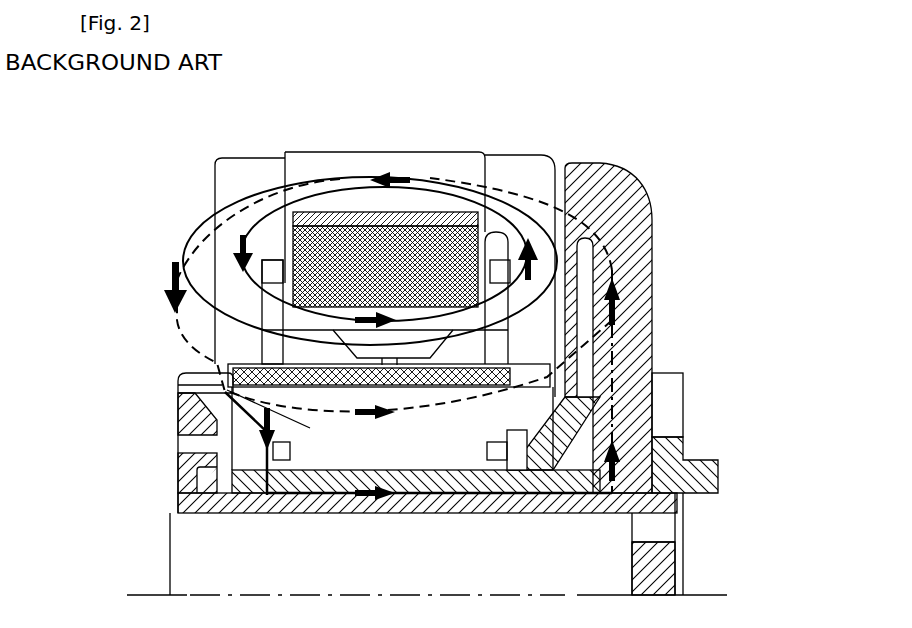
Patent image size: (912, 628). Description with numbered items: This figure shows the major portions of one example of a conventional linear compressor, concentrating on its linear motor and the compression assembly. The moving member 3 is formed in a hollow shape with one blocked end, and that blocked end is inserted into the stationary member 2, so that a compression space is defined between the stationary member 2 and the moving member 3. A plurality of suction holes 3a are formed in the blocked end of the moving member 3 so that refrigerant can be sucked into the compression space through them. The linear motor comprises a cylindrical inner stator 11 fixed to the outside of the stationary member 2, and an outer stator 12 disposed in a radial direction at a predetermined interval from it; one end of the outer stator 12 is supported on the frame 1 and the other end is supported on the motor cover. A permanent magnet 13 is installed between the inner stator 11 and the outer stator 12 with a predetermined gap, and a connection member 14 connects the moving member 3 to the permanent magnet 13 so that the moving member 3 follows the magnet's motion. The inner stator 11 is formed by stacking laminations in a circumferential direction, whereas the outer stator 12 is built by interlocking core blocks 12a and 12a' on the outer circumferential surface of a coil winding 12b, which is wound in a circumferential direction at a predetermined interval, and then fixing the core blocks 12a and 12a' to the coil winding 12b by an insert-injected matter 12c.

The frame 1 is at (652, 219).
The stationary member 2 is at (652, 437).
The moving member 3 is at (712, 567).
The suction hole 3a is at (683, 524).
The inner stator 11 is at (175, 407).
The outer stator 12 is at (535, 83).
The core block 12a is at (393, 278).
The core block 12a' is at (266, 225).
The coil winding 12b is at (416, 212).
The insert-injected matter 12c is at (462, 162).
The permanent magnet 13 is at (302, 362).
The connection member 14 is at (230, 372).